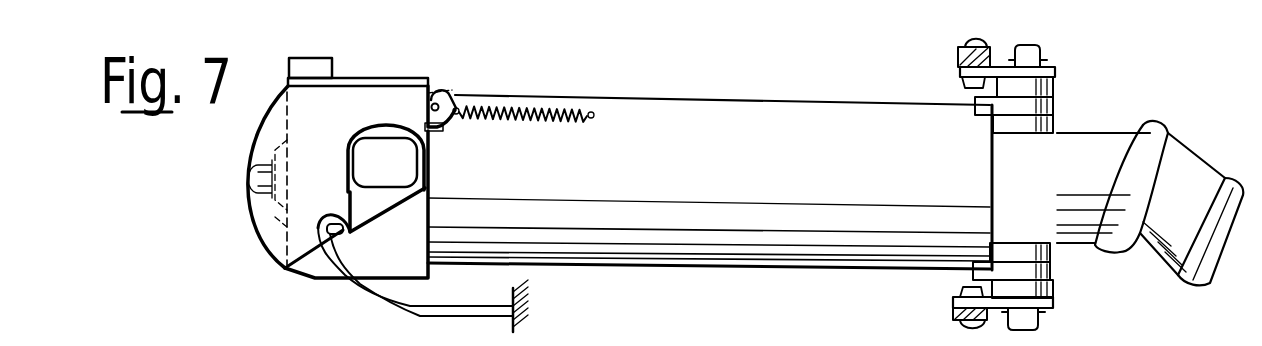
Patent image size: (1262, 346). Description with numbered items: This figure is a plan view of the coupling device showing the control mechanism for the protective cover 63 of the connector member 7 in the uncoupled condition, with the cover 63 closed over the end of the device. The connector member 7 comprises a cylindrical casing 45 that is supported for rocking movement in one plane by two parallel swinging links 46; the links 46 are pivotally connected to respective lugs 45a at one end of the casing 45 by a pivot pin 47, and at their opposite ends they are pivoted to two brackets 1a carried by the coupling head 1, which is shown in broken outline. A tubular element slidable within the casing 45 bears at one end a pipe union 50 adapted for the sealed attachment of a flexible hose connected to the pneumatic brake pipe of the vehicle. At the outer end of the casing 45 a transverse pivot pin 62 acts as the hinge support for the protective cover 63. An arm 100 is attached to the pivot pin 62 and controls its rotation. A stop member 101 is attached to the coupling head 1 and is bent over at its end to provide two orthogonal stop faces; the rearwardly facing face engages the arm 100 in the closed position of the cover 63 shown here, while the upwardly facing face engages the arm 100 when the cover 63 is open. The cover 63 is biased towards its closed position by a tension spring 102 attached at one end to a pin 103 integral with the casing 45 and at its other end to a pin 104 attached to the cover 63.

The connector member 7 is at (747, 99).
The coupling head 1 is at (503, 326).
The brackets 1a is at (958, 57).
The cylindrical casing 45 is at (688, 222).
The lugs 45a is at (1053, 105).
The swinging links 46 is at (1055, 72).
The pivot pin 47 is at (1038, 320).
The pipe union 50 is at (1198, 182).
The transverse pivot pin 62 is at (383, 152).
The protective cover 63 is at (258, 208).
The arm 100 is at (352, 265).
The stop member 101 is at (380, 305).
The tension spring 102 is at (527, 110).
The pin 103 is at (591, 112).
The pin 104 is at (443, 100).